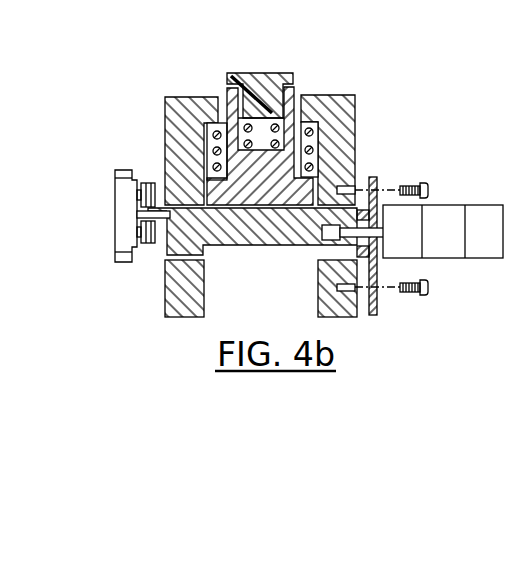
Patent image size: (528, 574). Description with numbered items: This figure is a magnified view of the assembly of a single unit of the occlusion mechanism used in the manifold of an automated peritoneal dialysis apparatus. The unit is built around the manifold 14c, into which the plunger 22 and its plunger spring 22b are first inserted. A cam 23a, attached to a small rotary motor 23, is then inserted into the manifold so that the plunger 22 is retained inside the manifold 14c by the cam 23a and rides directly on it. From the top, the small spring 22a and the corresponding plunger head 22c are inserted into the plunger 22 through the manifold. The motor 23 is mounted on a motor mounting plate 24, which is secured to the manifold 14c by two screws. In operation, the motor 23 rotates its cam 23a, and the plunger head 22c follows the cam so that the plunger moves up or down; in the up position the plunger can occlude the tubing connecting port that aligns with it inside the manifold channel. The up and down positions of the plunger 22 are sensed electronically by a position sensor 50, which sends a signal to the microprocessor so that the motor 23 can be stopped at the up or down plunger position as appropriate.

The plunger 22 is at (208, 186).
The small spring 22a is at (226, 132).
The plunger spring 22b is at (312, 158).
The plunger head 22c is at (238, 72).
The rotary motor 23 is at (455, 258).
The cam 23a is at (257, 242).
The motor mounting plate 24 is at (377, 312).
The manifold 14c is at (165, 292).
The position sensor 50 is at (115, 226).